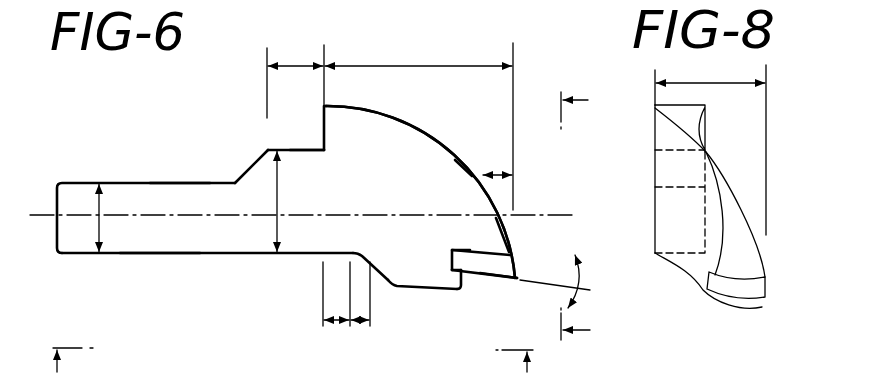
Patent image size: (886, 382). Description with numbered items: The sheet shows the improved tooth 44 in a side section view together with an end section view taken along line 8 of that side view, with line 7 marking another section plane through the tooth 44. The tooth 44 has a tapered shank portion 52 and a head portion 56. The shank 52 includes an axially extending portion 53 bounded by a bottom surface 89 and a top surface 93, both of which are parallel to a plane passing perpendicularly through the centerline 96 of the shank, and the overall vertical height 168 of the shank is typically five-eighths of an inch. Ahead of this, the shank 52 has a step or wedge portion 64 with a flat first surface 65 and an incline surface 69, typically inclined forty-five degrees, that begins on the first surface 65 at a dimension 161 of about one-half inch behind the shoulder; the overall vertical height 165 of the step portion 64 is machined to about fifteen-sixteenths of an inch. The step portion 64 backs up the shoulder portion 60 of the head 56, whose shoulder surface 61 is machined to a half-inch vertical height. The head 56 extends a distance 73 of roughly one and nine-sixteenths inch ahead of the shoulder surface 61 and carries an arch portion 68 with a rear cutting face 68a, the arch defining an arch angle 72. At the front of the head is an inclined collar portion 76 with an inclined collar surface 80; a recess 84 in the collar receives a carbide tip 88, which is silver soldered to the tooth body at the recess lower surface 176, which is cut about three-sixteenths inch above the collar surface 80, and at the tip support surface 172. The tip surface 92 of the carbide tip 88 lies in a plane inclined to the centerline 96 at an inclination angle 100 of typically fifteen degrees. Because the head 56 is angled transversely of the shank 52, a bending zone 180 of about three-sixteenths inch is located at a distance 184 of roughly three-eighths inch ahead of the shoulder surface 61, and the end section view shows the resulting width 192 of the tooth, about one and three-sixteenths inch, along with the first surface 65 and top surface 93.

In FIG. 6, the tooth 44 is at (432, 133).
In FIG. 6, the shank portion 52 is at (135, 180).
In FIG. 6, the axially extending portion 53 is at (190, 230).
In FIG. 6, the head portion 56 is at (435, 175).
In FIG. 6, the shoulder portion 60 is at (350, 133).
In FIG. 6, the shoulder surface 61 is at (323, 118).
In FIG. 6, the step portion 64 is at (306, 170).
In FIG. 6, the first surface 65 is at (285, 148).
In FIG. 8, the first surface 65 is at (660, 150).
In FIG. 6, the arch portion 68 is at (497, 241).
In FIG. 6, the rear cutting face 68a is at (512, 224).
In FIG. 6, the incline surface 69 is at (246, 175).
In FIG. 6, the arch angle 72 is at (505, 175).
In FIG. 6, the head extension distance 73 is at (420, 66).
In FIG. 6, the inclined collar portion 76 is at (408, 273).
In FIG. 6, the inclined collar surface 80 is at (423, 292).
In FIG. 6, the recess 84 is at (465, 250).
In FIG. 6, the carbide tip 88 is at (494, 262).
In FIG. 6, the bottom surface 89 is at (165, 254).
In FIG. 6, the tip surface 92 is at (483, 269).
In FIG. 6, the top surface 93 is at (176, 182).
In FIG. 8, the top surface 93 is at (660, 186).
In FIG. 6, the centerline 96 is at (45, 218).
In FIG. 6, the inclination angle 100 is at (588, 287).
In FIG. 6, the incline start dimension 161 is at (296, 66).
In FIG. 6, the step portion height 165 is at (277, 200).
In FIG. 6, the shank height 168 is at (101, 224).
In FIG. 6, the carbide tip support surface 172 is at (499, 250).
In FIG. 6, the recess lower surface 176 is at (470, 268).
In FIG. 6, the bending zone 180 is at (361, 330).
In FIG. 6, the bending zone distance 184 is at (331, 323).
In FIG. 8, the tooth width 192 is at (717, 83).
In FIG. 6, the section line 7- 7 is at (292, 355).
In FIG. 6, the section line 8- 8 is at (586, 216).